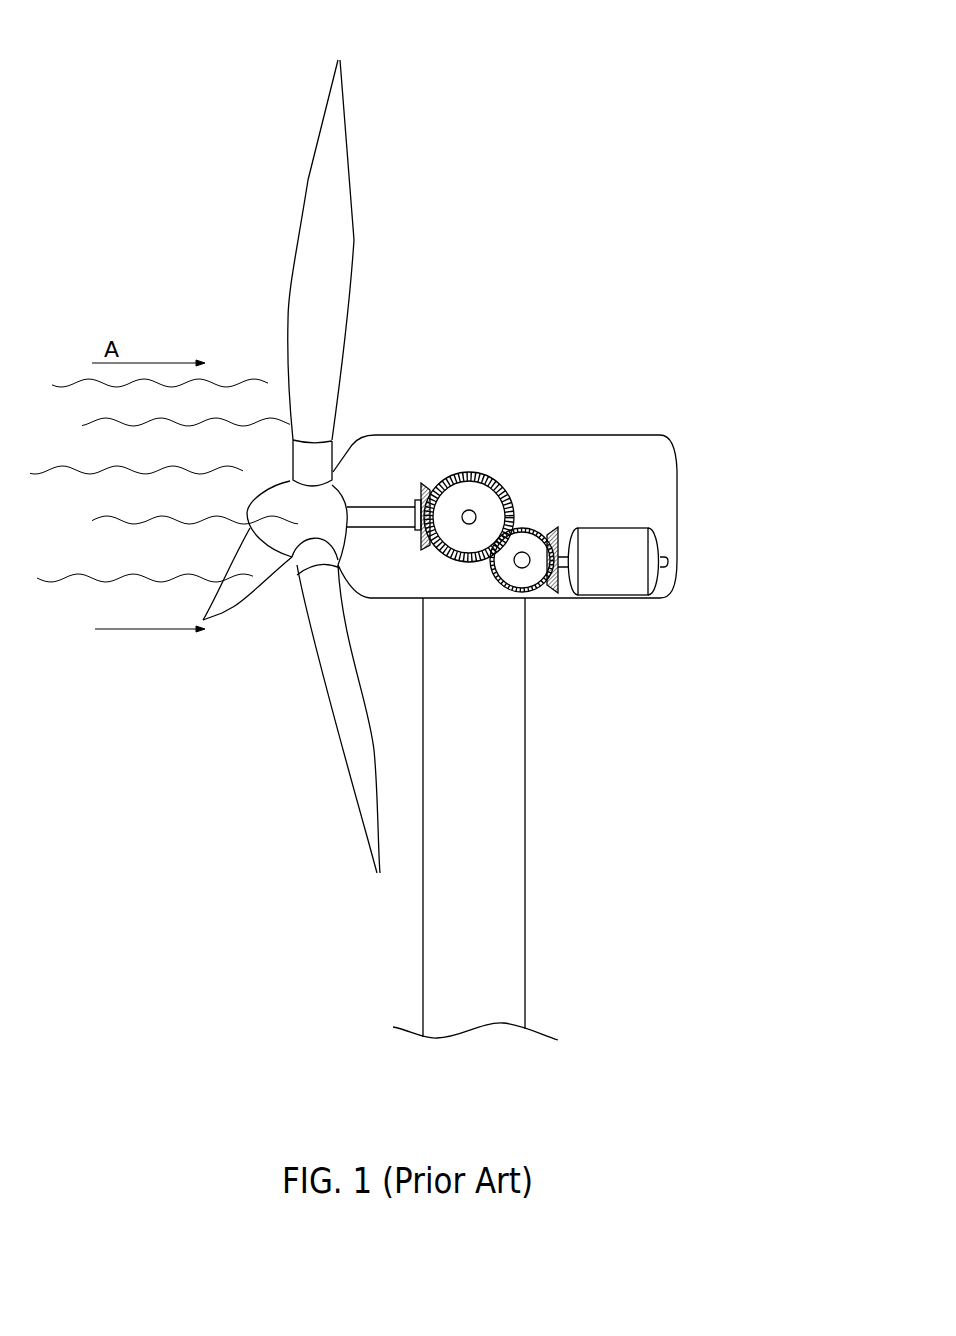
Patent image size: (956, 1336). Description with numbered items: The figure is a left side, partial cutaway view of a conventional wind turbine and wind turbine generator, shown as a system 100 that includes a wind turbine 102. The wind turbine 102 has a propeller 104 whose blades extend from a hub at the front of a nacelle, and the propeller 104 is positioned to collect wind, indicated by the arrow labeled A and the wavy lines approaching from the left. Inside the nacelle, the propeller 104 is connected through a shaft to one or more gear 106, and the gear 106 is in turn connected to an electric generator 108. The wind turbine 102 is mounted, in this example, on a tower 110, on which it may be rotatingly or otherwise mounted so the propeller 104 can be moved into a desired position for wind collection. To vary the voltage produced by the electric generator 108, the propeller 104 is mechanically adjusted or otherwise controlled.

The system 100 is at (510, 232).
The wind turbine 102 is at (403, 437).
The propeller 104 is at (263, 273).
The gear 106 is at (483, 468).
The electric generator 108 is at (612, 528).
The tower 110 is at (527, 748).